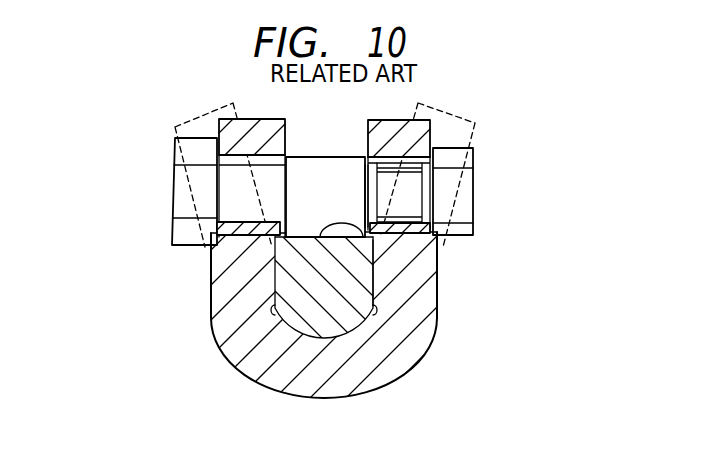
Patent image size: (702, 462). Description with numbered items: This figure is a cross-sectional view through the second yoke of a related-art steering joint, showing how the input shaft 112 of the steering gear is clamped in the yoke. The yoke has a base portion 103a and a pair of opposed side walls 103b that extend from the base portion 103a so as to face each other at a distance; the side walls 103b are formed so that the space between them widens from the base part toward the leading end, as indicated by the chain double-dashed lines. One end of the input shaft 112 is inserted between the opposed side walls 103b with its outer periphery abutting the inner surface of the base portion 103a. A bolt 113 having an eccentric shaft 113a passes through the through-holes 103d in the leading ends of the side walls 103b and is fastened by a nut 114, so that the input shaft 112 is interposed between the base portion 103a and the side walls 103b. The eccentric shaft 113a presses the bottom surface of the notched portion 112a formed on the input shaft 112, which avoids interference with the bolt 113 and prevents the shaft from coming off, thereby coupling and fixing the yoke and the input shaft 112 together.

The base portion 103a is at (260, 373).
The opposed side walls 103b is at (222, 130).
The through-hole 103d is at (227, 231).
The input shaft 112 is at (328, 322).
The notched portion 112a is at (378, 262).
The bolt 113 is at (178, 178).
The eccentric shaft 113a is at (323, 170).
The nut 114 is at (473, 225).